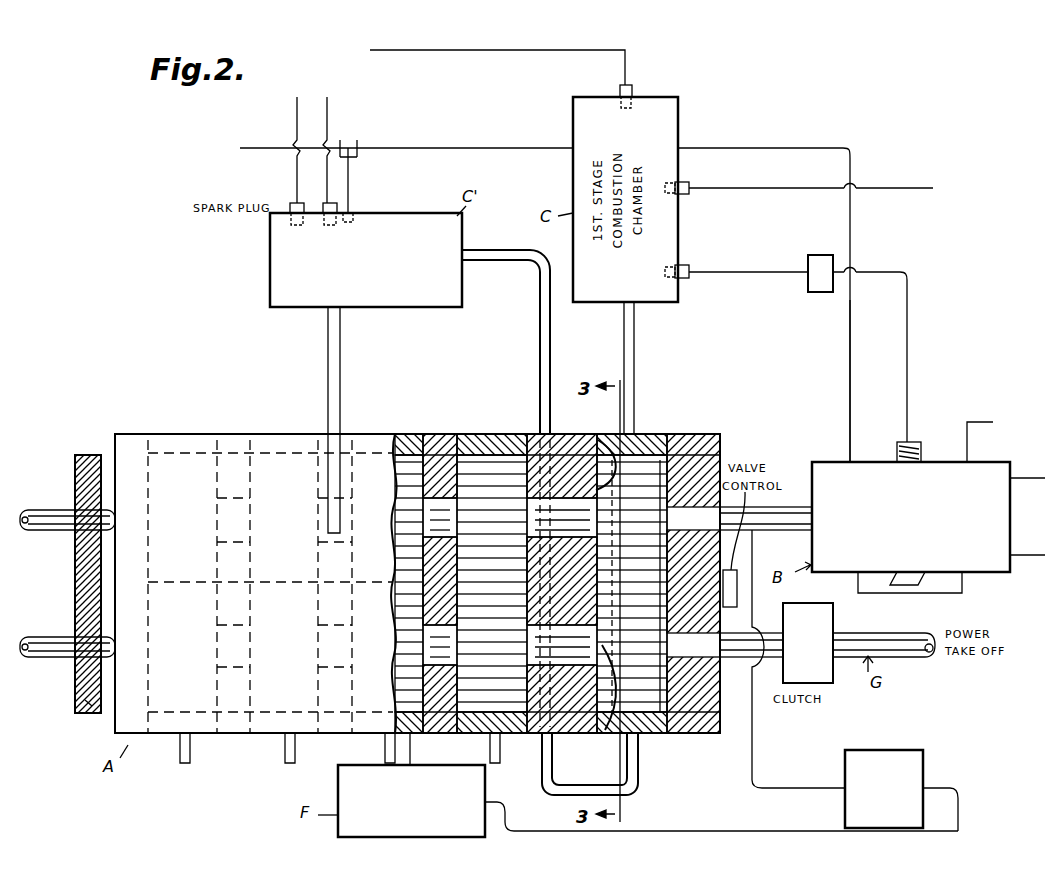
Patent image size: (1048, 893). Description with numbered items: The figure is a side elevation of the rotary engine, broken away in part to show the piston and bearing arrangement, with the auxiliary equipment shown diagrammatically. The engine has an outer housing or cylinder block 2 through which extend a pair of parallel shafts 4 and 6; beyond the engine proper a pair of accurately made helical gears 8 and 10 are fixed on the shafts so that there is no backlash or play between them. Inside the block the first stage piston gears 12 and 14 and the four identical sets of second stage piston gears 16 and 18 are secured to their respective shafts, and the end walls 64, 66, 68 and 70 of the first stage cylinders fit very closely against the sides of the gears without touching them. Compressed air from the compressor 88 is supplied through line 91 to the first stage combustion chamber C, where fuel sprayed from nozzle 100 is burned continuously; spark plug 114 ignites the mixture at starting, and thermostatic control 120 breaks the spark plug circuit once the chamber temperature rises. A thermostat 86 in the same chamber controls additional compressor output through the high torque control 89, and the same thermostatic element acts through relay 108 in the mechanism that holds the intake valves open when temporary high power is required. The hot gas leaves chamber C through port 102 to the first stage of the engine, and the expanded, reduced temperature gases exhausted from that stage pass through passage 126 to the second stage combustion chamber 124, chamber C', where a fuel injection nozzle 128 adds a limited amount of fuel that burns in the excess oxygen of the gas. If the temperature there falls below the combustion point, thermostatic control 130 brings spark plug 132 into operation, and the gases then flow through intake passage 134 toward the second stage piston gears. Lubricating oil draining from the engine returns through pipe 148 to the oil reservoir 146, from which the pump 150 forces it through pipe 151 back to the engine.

The outer housing or cylinder block 2 is at (167, 434).
The shaft 4 is at (53, 523).
The shaft 6 is at (54, 652).
The helical gear 8 is at (88, 455).
The helical gear 10 is at (90, 708).
The first stage piston gear 12 is at (640, 462).
The first stage piston gear 14 is at (640, 680).
The second stage piston gear 16 is at (207, 460).
The second stage piston gear 18 is at (270, 690).
The end wall 64 is at (683, 458).
The end wall 66 is at (595, 446).
The end wall 68 is at (661, 680).
The end wall 70 is at (600, 700).
The thermostat 86 is at (693, 270).
The compressor 88 is at (983, 565).
The high torque control 89 is at (917, 442).
The air supply line 91 is at (848, 388).
The fuel injection nozzle 100 is at (578, 142).
The port 102 is at (627, 342).
The relay 108 is at (820, 292).
The spark plug 114 is at (630, 115).
The thermostatic control 120 is at (692, 192).
The second stage combustion chamber 124 is at (272, 275).
The passage 126 is at (540, 350).
The fuel injection nozzle 128 is at (360, 222).
The thermostatic control 130 is at (337, 210).
The spark plug 132 is at (292, 214).
The intake passage 134 is at (340, 368).
The oil reservoir 146 is at (338, 790).
The oil return pipe 148 is at (412, 747).
The oil pump 150 is at (845, 803).
The oil supply pipe 151 is at (755, 745).